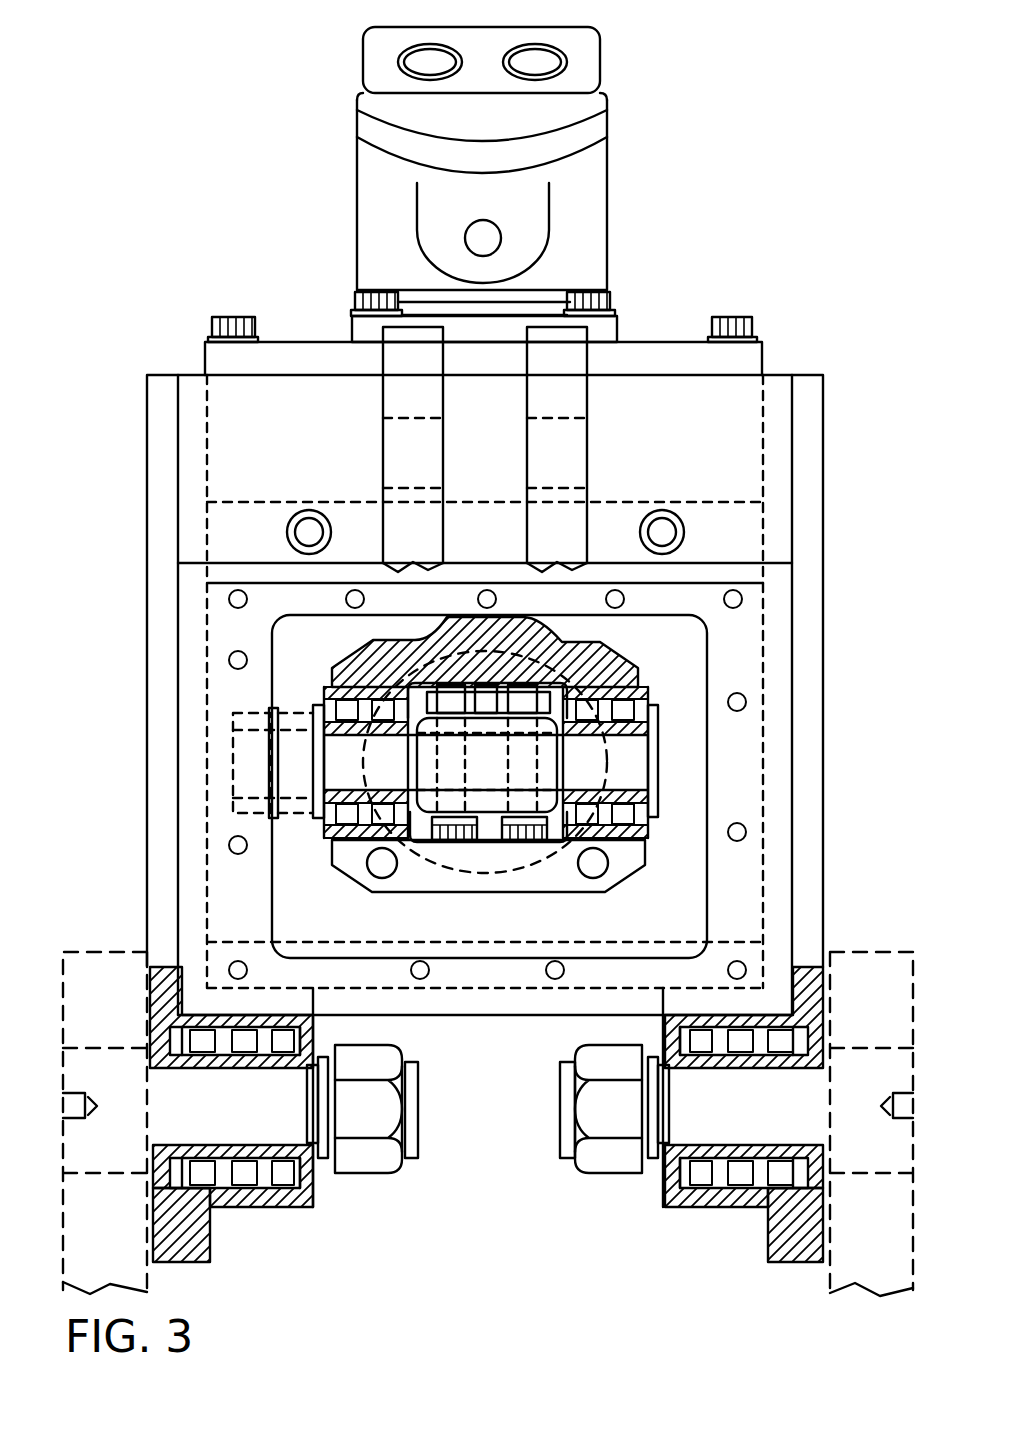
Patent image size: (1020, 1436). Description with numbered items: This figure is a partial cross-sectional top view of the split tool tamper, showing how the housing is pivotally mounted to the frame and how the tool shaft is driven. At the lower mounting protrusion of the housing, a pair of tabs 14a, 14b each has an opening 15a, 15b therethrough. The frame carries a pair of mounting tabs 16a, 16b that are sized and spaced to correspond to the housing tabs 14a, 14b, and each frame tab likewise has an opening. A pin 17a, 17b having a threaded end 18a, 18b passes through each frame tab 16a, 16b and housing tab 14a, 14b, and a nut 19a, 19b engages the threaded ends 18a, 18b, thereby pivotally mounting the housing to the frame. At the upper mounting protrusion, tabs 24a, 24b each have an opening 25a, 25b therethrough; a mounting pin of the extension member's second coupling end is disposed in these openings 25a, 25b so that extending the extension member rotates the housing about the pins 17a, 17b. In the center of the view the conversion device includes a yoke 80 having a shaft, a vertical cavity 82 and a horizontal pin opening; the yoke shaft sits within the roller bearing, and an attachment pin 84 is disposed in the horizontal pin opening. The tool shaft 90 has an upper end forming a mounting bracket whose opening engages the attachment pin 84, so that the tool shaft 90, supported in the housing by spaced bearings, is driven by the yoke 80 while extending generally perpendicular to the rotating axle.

The tab 24a is at (393, 405).
The tab 24b is at (577, 405).
The opening 25a is at (405, 455).
The opening 25b is at (575, 467).
The yoke 80 is at (620, 655).
The attachment pin 84 is at (660, 765).
The tool shaft 90 is at (490, 805).
The vertical cavity 82 is at (527, 858).
The threaded end 18a is at (419, 1135).
The threaded end 18b is at (557, 1085).
The nut 19a is at (367, 1167).
The nut 19b is at (605, 1167).
The pin 17a is at (258, 1130).
The pin 17b is at (733, 1125).
The opening 15a is at (282, 1167).
The opening 15b is at (680, 1170).
The tab 14a is at (210, 1237).
The tab 14b is at (777, 1255).
The mounting tab 16a is at (140, 1273).
The mounting tab 16b is at (842, 1270).